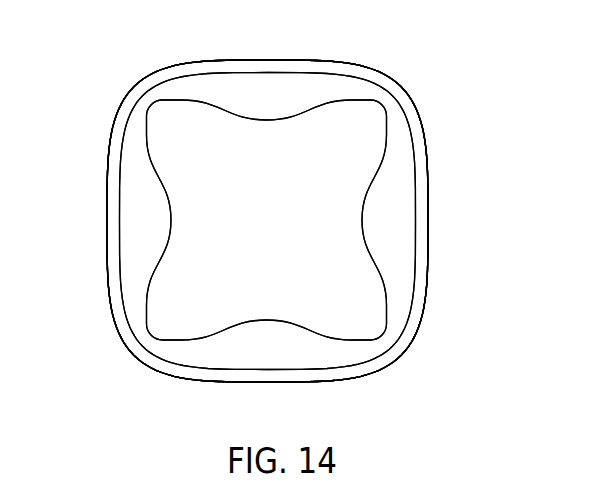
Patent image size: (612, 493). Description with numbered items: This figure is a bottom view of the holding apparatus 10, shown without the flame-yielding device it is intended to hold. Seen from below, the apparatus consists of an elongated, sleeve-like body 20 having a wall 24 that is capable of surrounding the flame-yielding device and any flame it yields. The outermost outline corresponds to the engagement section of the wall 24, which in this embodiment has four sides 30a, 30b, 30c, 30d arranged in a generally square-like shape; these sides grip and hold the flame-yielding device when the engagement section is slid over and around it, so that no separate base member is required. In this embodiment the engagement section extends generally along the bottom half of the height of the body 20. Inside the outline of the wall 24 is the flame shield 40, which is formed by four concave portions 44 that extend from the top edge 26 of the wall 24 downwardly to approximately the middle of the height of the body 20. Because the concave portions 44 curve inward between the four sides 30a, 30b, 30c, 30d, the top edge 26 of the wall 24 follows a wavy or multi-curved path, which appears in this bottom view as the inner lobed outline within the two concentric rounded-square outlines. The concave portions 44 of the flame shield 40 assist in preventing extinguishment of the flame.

The holding apparatus 10 is at (0, 70).
The body 20 is at (267, 191).
The wall 24 is at (228, 221).
The top edge 26 is at (267, 220).
The side 30a is at (267, 191).
The side 30b is at (292, 221).
The side 30c is at (267, 242).
The side 30d is at (236, 221).
The flame shield 40 is at (268, 190).
The concave portions 44 is at (277, 106).